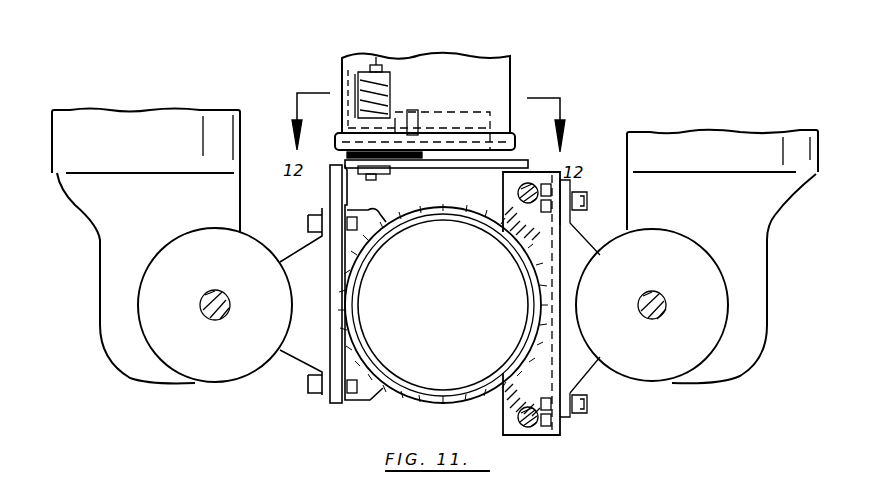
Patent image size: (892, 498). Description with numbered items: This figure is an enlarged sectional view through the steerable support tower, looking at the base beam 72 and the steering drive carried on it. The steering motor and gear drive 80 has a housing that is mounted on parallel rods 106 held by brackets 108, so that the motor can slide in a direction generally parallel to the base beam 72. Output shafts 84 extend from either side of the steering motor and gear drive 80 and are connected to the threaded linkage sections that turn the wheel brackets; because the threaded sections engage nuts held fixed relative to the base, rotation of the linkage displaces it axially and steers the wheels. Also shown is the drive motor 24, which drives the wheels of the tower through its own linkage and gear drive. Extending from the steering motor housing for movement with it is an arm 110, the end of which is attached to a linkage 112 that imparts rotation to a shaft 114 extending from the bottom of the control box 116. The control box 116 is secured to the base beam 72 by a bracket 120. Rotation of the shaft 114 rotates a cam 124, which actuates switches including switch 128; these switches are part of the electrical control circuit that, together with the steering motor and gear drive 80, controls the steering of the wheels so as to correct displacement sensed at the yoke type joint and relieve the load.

The drive motor 24 is at (134, 114).
The steering motor and gear drive 80 is at (694, 142).
The output shaft 84 is at (654, 292).
The base beam 72 is at (393, 398).
The parallel rods 106 is at (518, 197).
The brackets 108 is at (503, 405).
The arm 110 is at (445, 170).
The linkage 112 is at (377, 181).
The shaft 114 is at (375, 60).
The control box 116 is at (436, 57).
The bracket 120 is at (330, 186).
The cam 124 is at (398, 112).
The switch 128 is at (480, 110).